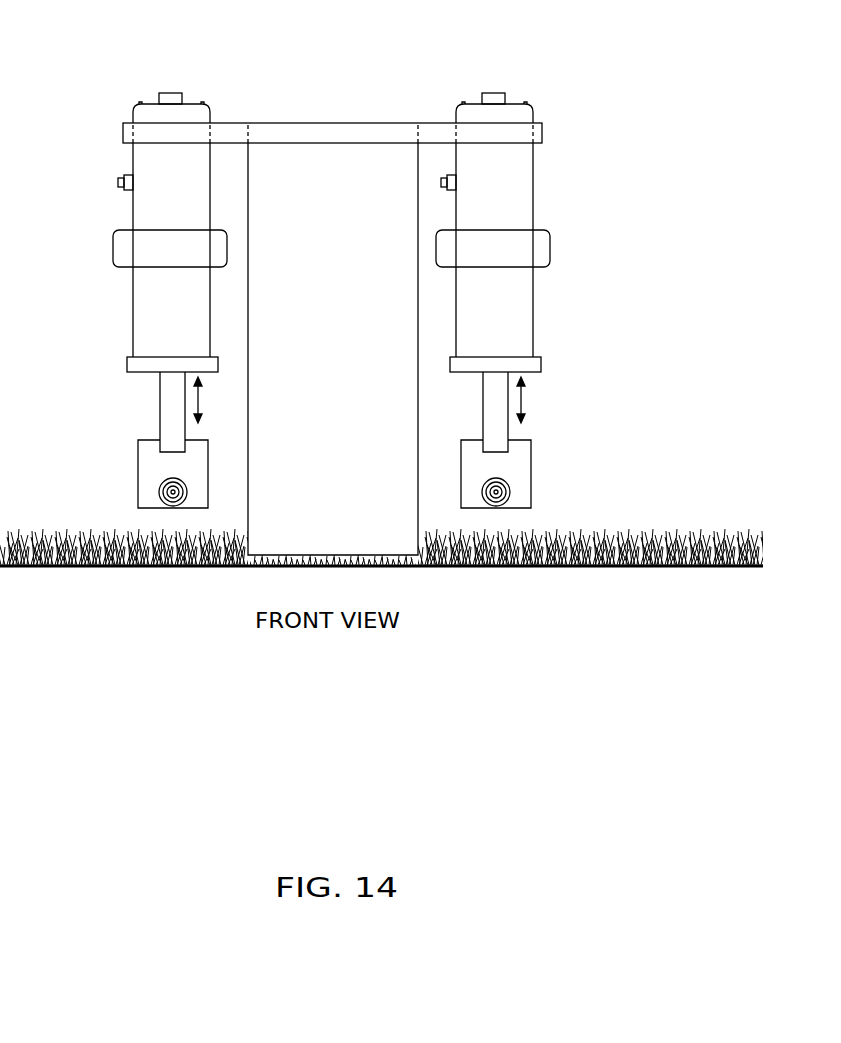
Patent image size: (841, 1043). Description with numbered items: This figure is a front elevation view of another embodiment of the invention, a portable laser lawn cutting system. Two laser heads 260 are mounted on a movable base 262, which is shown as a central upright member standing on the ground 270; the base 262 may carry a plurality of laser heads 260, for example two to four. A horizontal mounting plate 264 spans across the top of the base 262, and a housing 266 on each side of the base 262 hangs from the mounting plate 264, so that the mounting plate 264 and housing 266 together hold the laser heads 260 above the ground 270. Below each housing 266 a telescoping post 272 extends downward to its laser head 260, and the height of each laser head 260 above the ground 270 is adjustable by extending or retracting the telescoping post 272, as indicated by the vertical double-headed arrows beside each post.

The laser head 260 is at (143, 468).
The movable base 262 is at (327, 165).
The mounting plate 264 is at (227, 123).
The housing 266 is at (147, 193).
The ground 270 is at (655, 530).
The telescoping post 272 is at (170, 402).